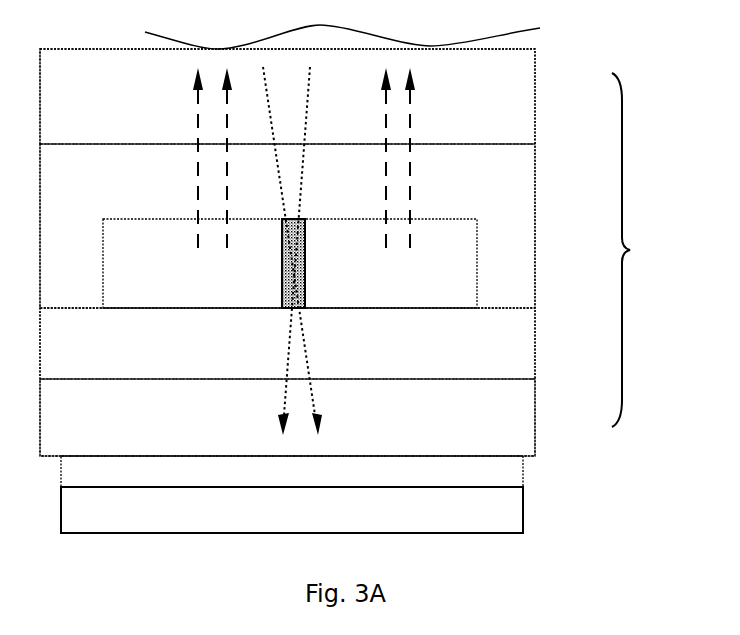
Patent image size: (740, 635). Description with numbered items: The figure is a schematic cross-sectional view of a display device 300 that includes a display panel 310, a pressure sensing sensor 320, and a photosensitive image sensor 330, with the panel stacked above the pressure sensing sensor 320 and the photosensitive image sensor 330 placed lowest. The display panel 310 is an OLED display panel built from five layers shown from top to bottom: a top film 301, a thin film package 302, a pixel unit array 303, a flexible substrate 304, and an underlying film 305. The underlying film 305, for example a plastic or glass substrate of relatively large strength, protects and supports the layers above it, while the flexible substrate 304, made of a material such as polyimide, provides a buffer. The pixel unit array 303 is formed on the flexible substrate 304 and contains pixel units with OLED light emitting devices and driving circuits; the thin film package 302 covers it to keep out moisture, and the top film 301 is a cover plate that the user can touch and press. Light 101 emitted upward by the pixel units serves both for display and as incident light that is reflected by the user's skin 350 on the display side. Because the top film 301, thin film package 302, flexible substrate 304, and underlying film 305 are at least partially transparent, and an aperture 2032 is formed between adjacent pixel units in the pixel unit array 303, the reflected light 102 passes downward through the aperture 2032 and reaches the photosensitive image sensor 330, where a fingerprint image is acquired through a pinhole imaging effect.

The display device 300 is at (634, 50).
The top film 301 is at (497, 113).
The thin film package 302 is at (510, 197).
The pixel unit array 303 is at (434, 282).
The flexible substrate 304 is at (490, 357).
The underlying film 305 is at (481, 433).
The display panel 310 is at (642, 250).
The pressure sensing sensor 320 is at (498, 473).
The photosensitive image sensor 330 is at (498, 511).
The aperture 2032 is at (305, 235).
The light emitted by the pixel unit 101 is at (286, 158).
The light passing through the aperture 102 is at (292, 259).
The user's skin 350 is at (342, 35).